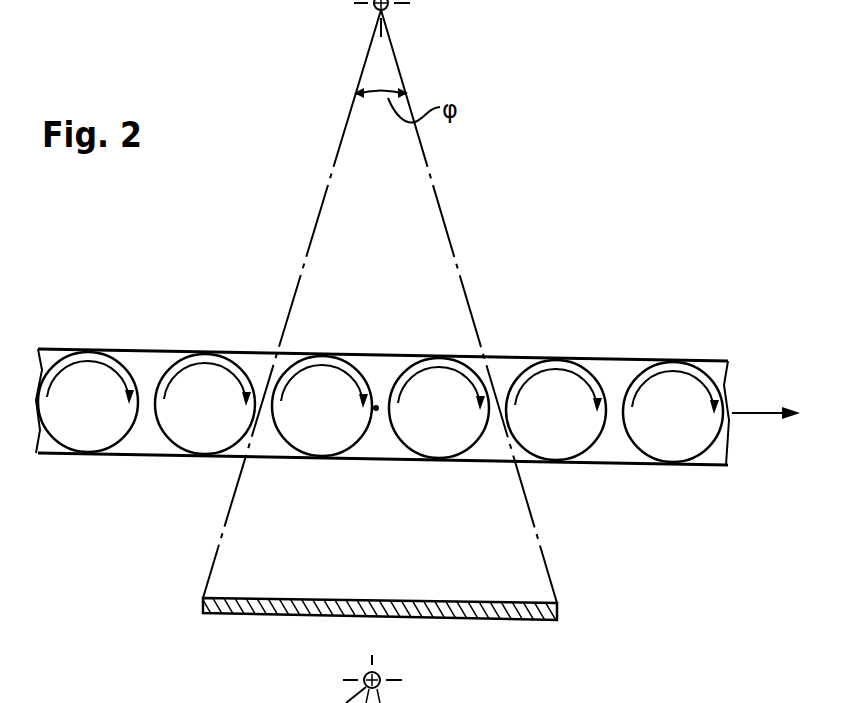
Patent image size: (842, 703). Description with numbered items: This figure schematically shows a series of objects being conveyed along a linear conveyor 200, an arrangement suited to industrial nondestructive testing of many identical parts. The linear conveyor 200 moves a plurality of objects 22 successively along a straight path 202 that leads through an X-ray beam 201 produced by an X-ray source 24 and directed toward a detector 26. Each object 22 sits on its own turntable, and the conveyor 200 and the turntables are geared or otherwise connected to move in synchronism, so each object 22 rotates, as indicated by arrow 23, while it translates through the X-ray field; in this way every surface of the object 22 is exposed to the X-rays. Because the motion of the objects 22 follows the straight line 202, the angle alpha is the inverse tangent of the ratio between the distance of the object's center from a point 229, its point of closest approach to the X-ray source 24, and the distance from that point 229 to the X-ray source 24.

The X-ray source 24 is at (389, 8).
The X-ray beam 201 is at (438, 195).
The linear conveyor 200 is at (556, 258).
The object 22 is at (88, 435).
The arrow indicating rotation 23 is at (92, 360).
The point of closest approach 229 is at (376, 410).
The straight path 202 is at (750, 410).
The detector 26 is at (495, 621).